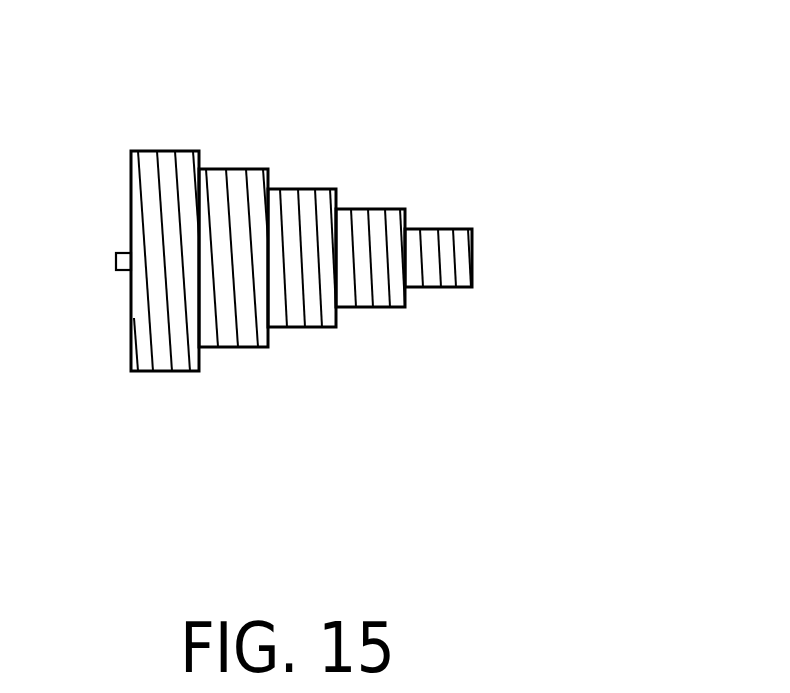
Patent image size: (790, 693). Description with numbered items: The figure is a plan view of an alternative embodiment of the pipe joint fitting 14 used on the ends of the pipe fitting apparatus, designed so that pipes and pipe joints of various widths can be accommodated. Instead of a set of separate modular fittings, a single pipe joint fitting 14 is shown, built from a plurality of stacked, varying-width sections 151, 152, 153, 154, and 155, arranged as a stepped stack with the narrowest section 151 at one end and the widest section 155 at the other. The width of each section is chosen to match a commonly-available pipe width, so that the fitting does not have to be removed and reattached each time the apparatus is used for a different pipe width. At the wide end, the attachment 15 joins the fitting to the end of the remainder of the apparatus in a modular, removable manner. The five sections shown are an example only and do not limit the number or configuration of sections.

The pipe joint fitting 14 is at (463, 167).
The attachment 15 is at (123, 258).
The section 151 is at (440, 263).
The section 152 is at (362, 253).
The section 153 is at (298, 260).
The section 154 is at (225, 265).
The section 155 is at (158, 292).